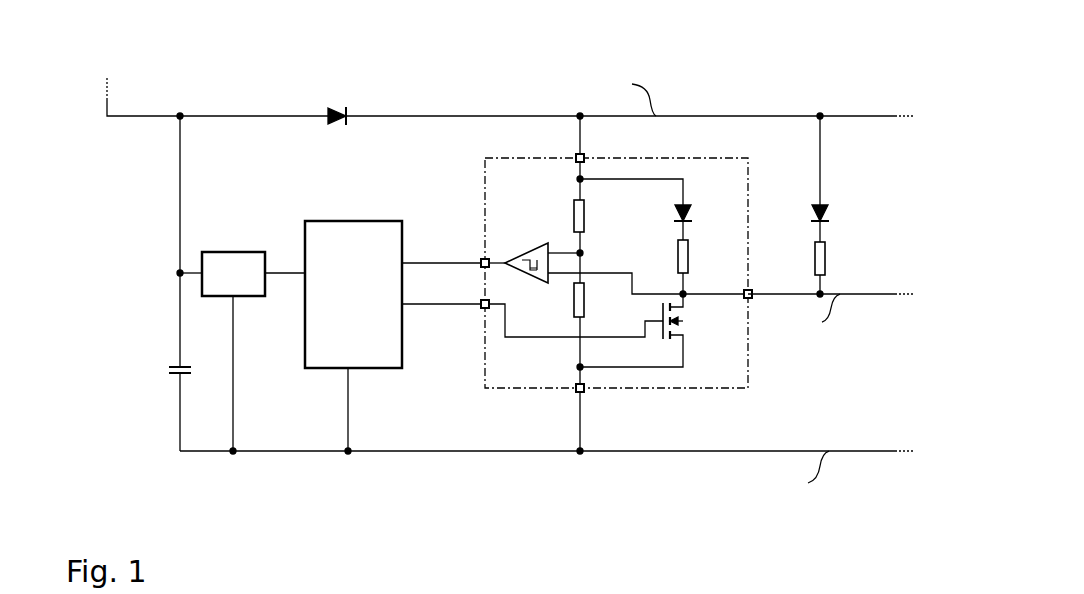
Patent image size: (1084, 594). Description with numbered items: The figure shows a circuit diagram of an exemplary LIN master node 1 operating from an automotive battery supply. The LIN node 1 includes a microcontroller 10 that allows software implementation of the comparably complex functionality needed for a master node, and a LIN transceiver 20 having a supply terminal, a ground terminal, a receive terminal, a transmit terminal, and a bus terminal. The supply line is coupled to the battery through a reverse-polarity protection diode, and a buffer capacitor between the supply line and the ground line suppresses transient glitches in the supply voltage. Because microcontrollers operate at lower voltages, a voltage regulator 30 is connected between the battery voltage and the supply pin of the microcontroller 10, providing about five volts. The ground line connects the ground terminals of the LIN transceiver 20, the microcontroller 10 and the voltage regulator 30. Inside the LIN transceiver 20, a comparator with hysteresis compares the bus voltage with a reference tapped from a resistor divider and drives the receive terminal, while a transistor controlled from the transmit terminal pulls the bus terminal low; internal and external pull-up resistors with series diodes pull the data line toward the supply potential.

The LIN node 1 is at (390, 534).
The microcontroller 10 is at (353, 336).
The LIN transceiver 20 is at (632, 283).
The voltage regulator 30 is at (233, 328).